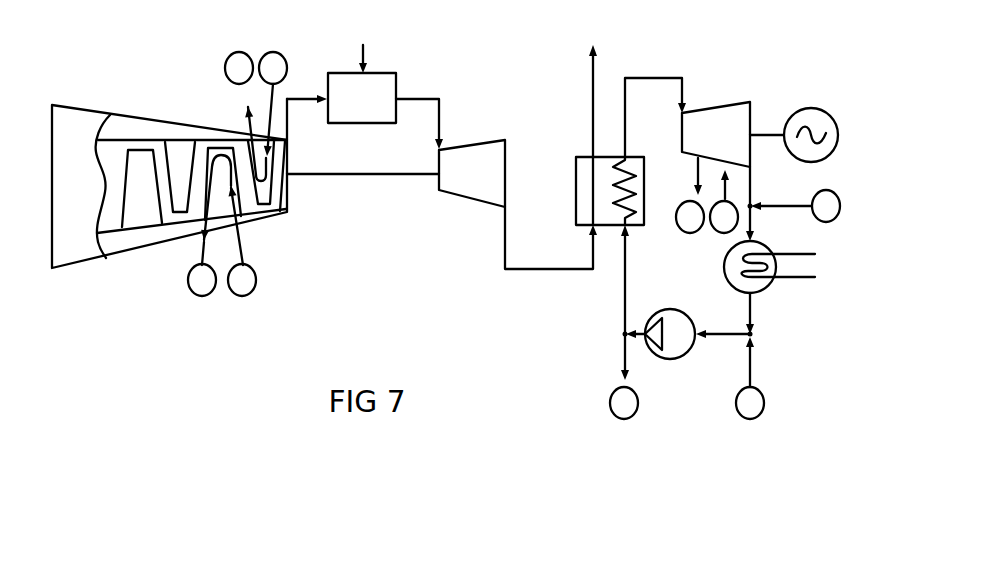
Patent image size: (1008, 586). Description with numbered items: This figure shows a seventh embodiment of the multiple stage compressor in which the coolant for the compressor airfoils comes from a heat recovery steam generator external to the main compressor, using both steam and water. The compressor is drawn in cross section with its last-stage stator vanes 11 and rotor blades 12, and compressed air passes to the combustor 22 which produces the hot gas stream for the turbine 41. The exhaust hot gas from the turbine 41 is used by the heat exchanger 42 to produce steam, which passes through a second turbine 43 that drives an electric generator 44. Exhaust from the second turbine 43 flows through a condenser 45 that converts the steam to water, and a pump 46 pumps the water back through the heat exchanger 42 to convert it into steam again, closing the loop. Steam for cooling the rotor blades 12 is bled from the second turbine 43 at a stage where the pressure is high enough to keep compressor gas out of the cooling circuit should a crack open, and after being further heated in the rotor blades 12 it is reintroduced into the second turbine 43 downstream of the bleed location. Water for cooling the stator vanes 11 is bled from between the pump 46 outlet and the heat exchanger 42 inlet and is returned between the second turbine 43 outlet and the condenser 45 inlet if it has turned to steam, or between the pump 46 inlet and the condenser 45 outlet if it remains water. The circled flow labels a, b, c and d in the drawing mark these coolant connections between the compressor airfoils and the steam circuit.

The stator vanes 11 is at (262, 195).
The rotor blades 12 is at (222, 170).
The combustor 22 is at (373, 85).
The turbine 41 is at (471, 167).
The heat exchanger 42 is at (585, 173).
The second turbine 43 is at (717, 123).
The electric generator 44 is at (822, 127).
The condenser 45 is at (767, 279).
The pump 46 is at (677, 343).
The cooling medium stream a is at (466, 227).
The cooling medium stream b is at (463, 233).
The cooling medium stream c is at (448, 235).
The cooling medium stream d is at (532, 235).